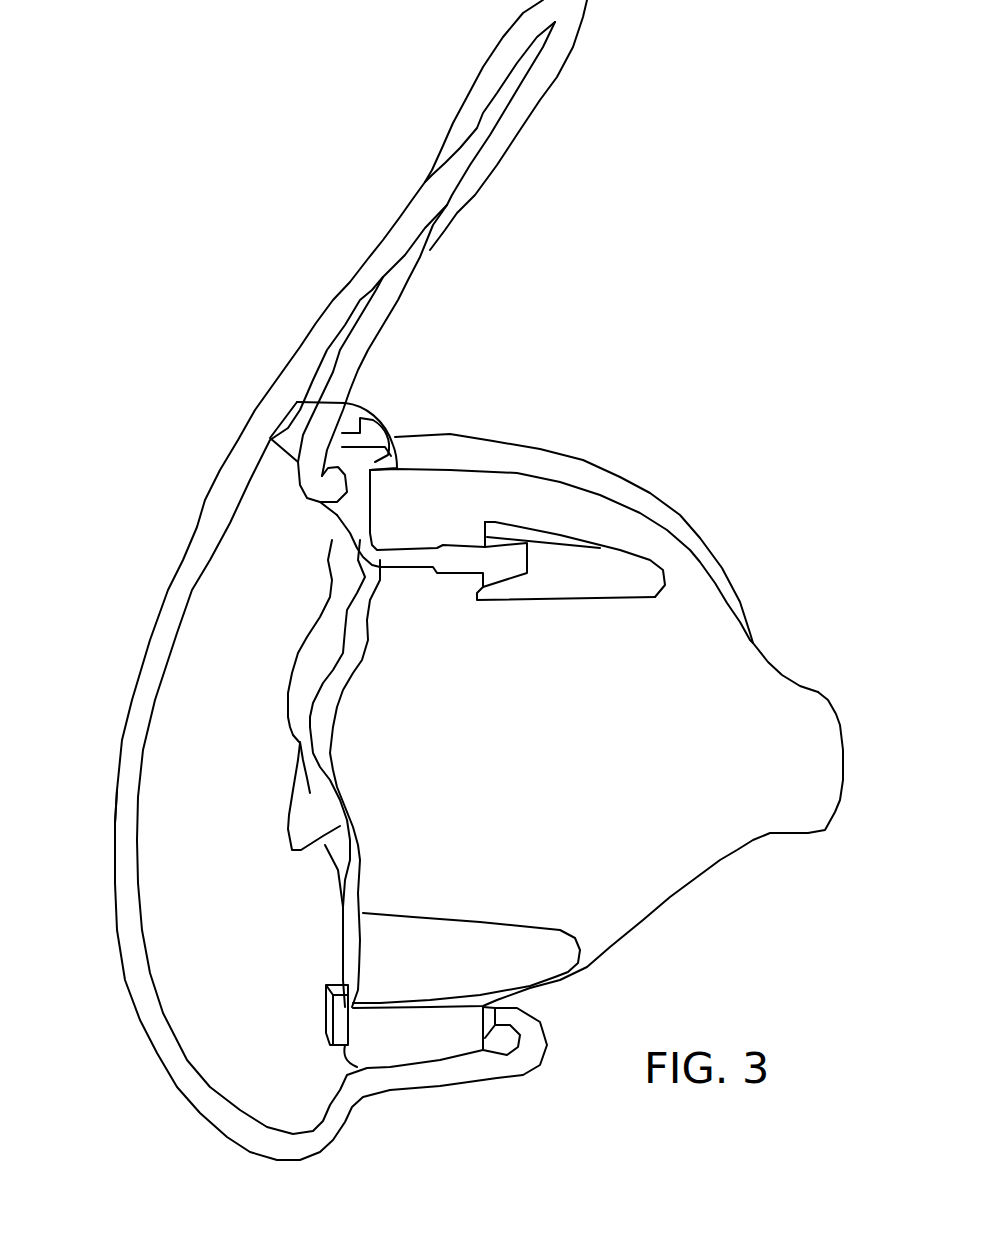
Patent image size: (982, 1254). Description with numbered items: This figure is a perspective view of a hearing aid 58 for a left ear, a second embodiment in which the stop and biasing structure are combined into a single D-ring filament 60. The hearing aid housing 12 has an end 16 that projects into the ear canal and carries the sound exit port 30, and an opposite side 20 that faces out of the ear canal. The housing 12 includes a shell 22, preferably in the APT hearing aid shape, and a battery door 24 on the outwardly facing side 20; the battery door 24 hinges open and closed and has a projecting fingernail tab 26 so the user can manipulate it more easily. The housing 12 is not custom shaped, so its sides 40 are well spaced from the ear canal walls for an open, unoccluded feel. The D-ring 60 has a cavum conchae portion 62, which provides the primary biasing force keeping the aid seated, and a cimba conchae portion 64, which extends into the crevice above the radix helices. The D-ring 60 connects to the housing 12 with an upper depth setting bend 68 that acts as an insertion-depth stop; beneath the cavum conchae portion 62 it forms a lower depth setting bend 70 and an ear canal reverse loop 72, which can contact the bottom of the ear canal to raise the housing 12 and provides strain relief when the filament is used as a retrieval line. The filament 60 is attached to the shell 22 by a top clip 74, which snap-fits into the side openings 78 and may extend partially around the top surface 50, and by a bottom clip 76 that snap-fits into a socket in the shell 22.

The hearing aid housing 12 is at (702, 541).
The end 16 is at (788, 798).
The side 20 is at (337, 922).
The shell 22 is at (670, 677).
The battery door 24 is at (303, 665).
The fingernail tab 26 is at (290, 827).
The sound exit port 30 is at (842, 743).
The sides 40 is at (600, 797).
The top surface 50 is at (460, 455).
The hearing aid 58 is at (152, 320).
The D-ring filament 60 is at (194, 528).
The cavum conchae portion 62 is at (118, 882).
The cimba conchae portion 64 is at (528, 92).
The upper depth setting bend 68 is at (338, 380).
The lower depth setting bend 70 is at (320, 1135).
The ear canal reverse loop 72 is at (455, 1070).
The top clip 74 is at (353, 400).
The bottom clip 76 is at (323, 1023).
The side openings 78 is at (512, 525).